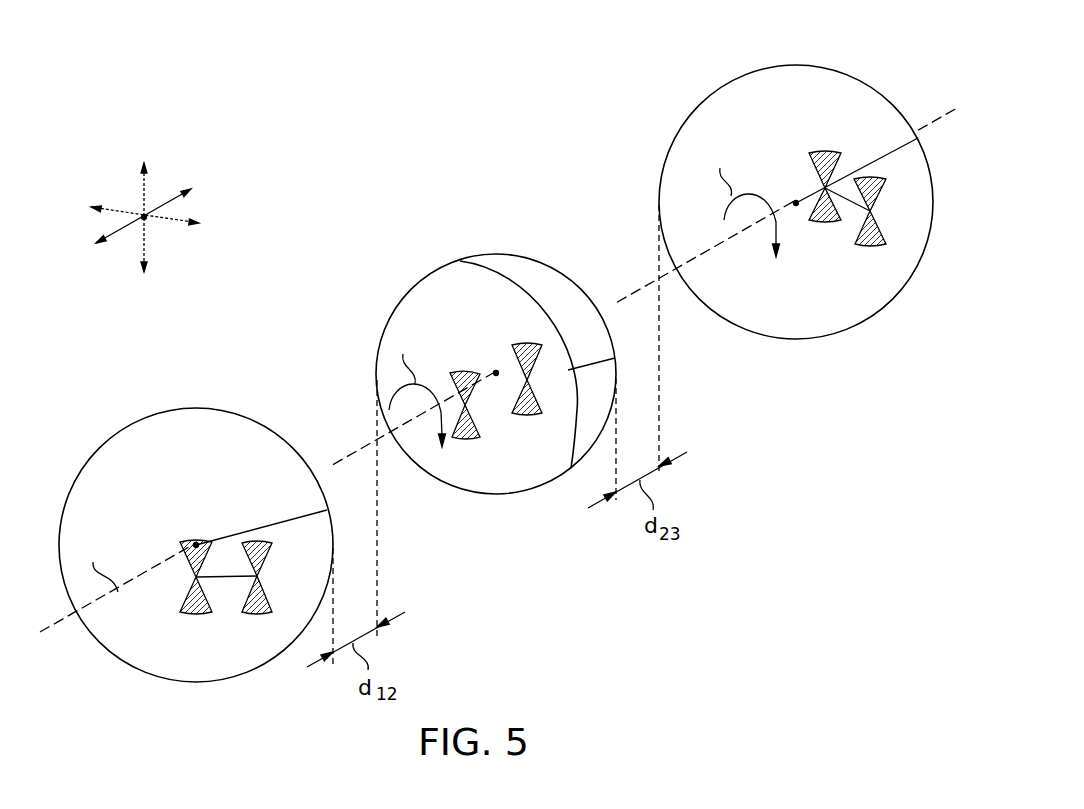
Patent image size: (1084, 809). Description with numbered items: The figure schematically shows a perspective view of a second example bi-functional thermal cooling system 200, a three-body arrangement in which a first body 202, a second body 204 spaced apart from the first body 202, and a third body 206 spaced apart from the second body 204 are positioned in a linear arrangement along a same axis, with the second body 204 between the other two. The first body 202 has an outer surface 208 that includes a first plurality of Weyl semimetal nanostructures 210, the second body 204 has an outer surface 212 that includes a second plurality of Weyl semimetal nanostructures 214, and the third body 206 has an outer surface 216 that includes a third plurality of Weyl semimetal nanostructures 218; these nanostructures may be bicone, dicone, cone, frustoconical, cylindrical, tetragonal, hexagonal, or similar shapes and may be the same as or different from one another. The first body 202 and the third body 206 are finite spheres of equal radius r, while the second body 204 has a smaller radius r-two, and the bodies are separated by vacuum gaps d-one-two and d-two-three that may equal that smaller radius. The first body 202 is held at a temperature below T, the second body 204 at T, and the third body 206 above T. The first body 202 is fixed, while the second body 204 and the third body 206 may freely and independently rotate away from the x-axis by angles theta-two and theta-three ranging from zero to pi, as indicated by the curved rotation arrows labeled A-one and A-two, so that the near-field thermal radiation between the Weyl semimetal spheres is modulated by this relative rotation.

The second example bi-functional thermal cooling system 200 is at (159, 165).
The first body 202 is at (196, 503).
The second body 204 is at (484, 342).
The third body 206 is at (777, 179).
The outer surface 208 is at (196, 662).
The first plurality of Weyl semimetal nanostructures 210 is at (255, 608).
The outer surface 212 is at (558, 462).
The second plurality of Weyl semimetal nanostructures 214 is at (465, 430).
The outer surface 216 is at (813, 321).
The third plurality of Weyl semimetal nanostructures 218 is at (870, 241).